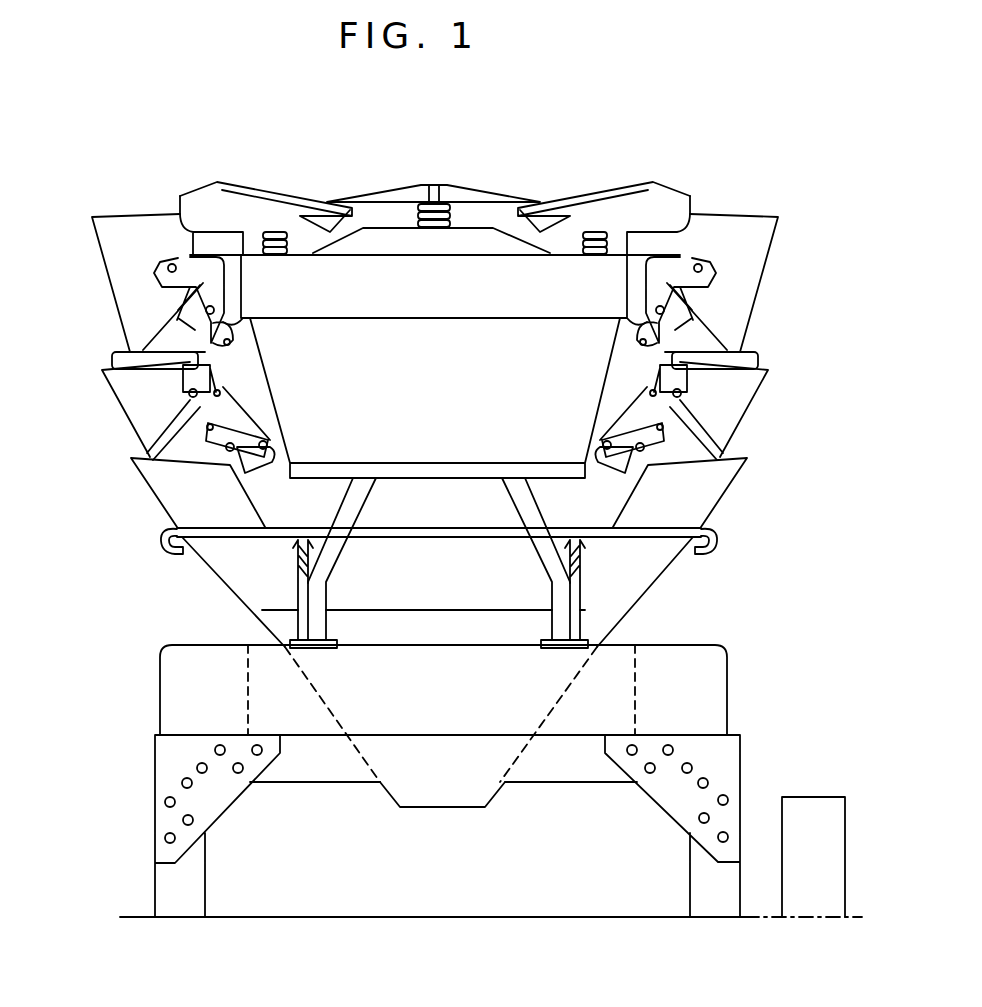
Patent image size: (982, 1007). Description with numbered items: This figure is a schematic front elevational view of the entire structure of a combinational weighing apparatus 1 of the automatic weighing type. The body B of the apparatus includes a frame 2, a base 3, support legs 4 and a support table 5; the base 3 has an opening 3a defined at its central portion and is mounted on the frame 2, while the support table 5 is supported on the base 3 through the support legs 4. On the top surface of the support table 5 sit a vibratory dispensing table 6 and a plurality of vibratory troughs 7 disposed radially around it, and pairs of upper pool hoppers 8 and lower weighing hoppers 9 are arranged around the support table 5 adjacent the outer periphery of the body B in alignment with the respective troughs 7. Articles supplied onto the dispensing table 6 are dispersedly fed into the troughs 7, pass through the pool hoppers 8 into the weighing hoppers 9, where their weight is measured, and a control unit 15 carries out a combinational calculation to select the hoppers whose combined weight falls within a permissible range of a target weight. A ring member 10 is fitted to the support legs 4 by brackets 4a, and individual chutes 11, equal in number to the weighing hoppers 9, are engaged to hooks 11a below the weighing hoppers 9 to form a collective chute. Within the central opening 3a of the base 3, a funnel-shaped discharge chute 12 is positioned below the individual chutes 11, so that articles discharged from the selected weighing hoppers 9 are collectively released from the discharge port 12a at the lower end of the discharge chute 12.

The combinational weighing apparatus 1 is at (725, 131).
The frame 2 is at (713, 790).
The base 3 is at (710, 687).
The opening 3a is at (249, 697).
The support legs 4 is at (340, 550).
The brackets 4a is at (317, 550).
The support table 5 is at (438, 478).
The dispensing table 6 is at (431, 183).
The troughs 7 is at (260, 197).
The pool hoppers 8 is at (111, 280).
The weighing hoppers 9 is at (123, 415).
The ring member 10 is at (437, 542).
The individual chutes 11 is at (160, 493).
The hooks 11a is at (167, 545).
The discharge chute 12 is at (617, 628).
The discharge port 12a is at (443, 810).
The control unit 15 is at (810, 802).
The body B is at (513, 279).